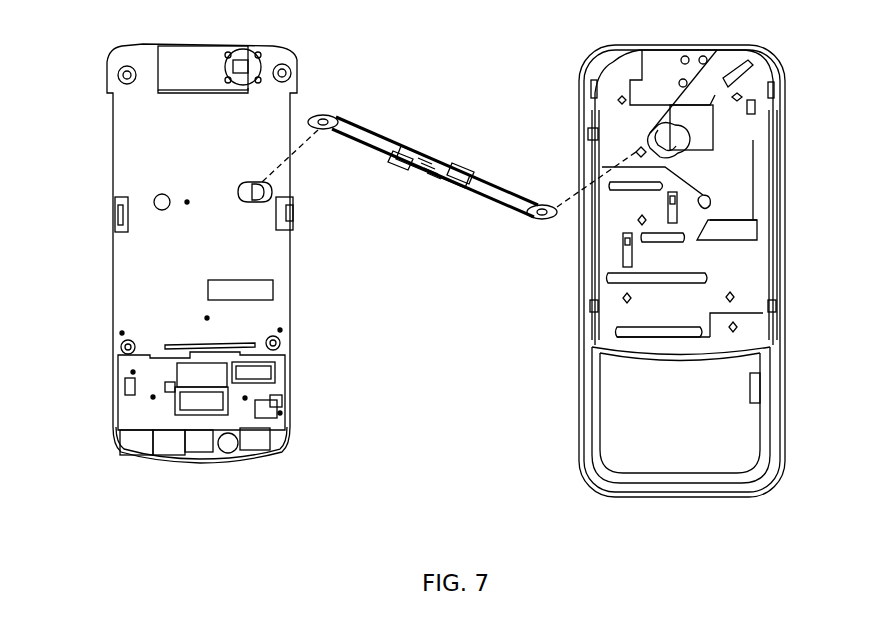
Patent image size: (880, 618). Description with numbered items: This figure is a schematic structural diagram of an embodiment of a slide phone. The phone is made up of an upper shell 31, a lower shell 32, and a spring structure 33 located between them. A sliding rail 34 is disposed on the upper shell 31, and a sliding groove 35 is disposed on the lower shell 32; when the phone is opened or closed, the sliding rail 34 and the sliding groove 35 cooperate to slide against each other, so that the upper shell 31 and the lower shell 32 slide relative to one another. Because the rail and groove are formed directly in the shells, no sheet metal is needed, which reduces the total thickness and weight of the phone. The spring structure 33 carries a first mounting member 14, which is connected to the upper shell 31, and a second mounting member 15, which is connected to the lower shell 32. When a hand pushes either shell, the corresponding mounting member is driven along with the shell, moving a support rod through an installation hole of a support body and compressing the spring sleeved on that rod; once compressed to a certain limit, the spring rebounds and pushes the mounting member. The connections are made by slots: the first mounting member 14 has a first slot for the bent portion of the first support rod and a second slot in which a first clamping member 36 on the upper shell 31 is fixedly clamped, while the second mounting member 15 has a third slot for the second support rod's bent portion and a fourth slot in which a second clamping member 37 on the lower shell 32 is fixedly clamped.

The first mounting member 14 is at (324, 118).
The second mounting member 15 is at (540, 222).
The upper shell 31 is at (108, 302).
The lower shell 32 is at (678, 420).
The spring structure 33 is at (423, 207).
The sliding rail 34 is at (290, 308).
The sliding groove 35 is at (785, 270).
The first clamping member 36 is at (268, 186).
The second clamping member 37 is at (653, 137).